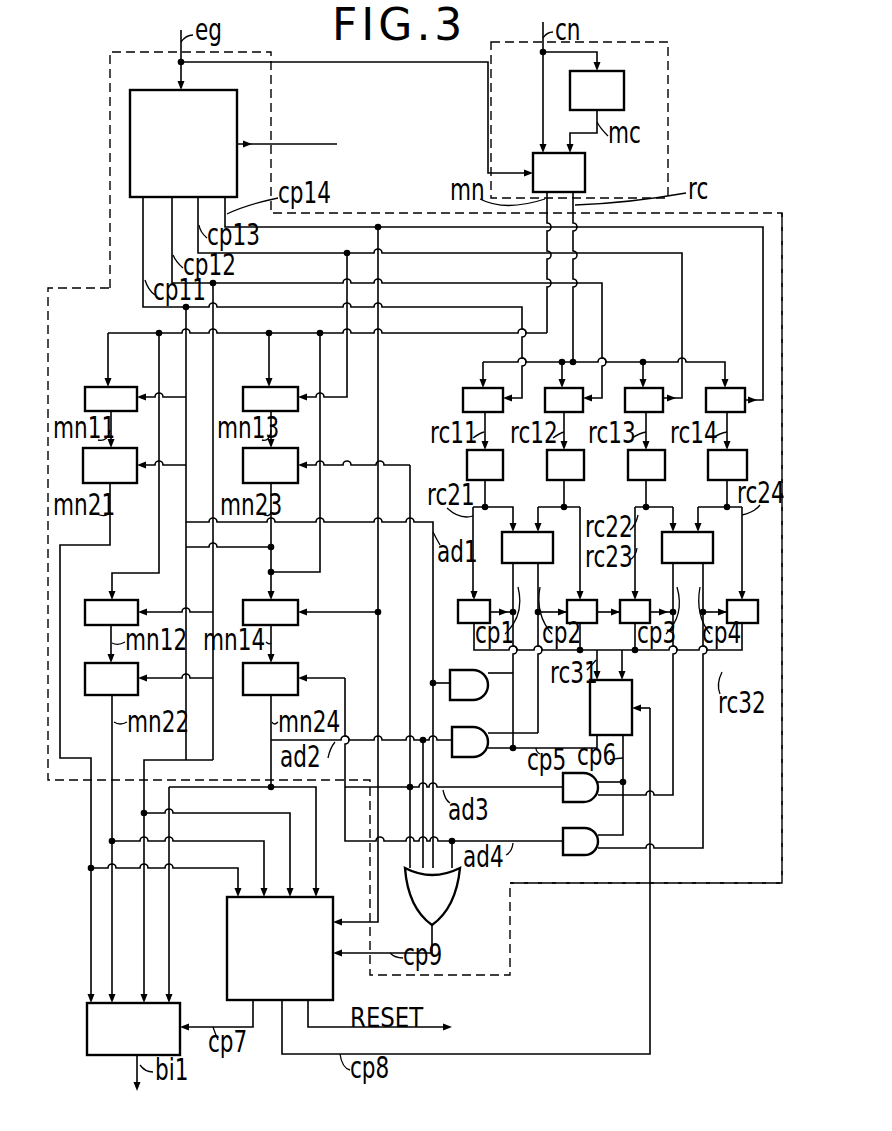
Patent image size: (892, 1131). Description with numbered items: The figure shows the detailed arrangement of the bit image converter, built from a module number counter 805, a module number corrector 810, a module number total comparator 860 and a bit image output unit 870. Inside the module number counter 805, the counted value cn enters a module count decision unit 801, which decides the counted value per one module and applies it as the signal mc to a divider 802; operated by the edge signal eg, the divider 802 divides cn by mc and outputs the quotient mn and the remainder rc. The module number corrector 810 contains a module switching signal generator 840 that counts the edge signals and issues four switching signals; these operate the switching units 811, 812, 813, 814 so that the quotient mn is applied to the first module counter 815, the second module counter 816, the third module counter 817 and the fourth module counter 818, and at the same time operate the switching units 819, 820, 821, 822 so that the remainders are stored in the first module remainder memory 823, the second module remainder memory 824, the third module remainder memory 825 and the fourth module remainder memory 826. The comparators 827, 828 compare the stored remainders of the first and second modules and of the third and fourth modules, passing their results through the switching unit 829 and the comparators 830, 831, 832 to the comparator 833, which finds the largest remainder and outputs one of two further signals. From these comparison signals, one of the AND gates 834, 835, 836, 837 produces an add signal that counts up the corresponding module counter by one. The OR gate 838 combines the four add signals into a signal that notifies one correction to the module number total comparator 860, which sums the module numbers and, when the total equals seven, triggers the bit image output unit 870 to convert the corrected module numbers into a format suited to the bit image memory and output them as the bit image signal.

The module switching signal generator 840 is at (208, 72).
The module number counter 805 is at (668, 100).
The module count decision unit 801 is at (618, 86).
The divider 802 is at (585, 172).
The module number corrector 810 is at (738, 211).
The switching unit 811 is at (118, 389).
The switching unit 812 is at (137, 590).
The switching unit 813 is at (280, 389).
The switching unit 814 is at (298, 602).
The first module counter 815 is at (126, 455).
The second module counter 816 is at (99, 697).
The third module counter 817 is at (283, 455).
The fourth module counter 818 is at (242, 697).
The switching unit 819 is at (470, 388).
The switching unit 820 is at (550, 388).
The switching unit 821 is at (633, 392).
The switching unit 822 is at (715, 392).
The first module remainder memory 823 is at (470, 465).
The second module remainder memory 824 is at (549, 470).
The third module remainder memory 825 is at (630, 470).
The fourth module remainder memory 826 is at (746, 455).
The comparator 827 is at (545, 548).
The comparator 828 is at (706, 548).
The switching unit 829 is at (467, 626).
The comparator 830 is at (596, 602).
The comparator 831 is at (622, 624).
The comparator 832 is at (751, 627).
The comparator 833 is at (597, 704).
The AND gate 834 is at (457, 700).
The AND gate 835 is at (480, 755).
The AND gate 836 is at (565, 800).
The AND gate 837 is at (565, 855).
The OR gate 838 is at (455, 888).
The module number total comparator 860 is at (322, 908).
The bit image output unit 870 is at (178, 1010).